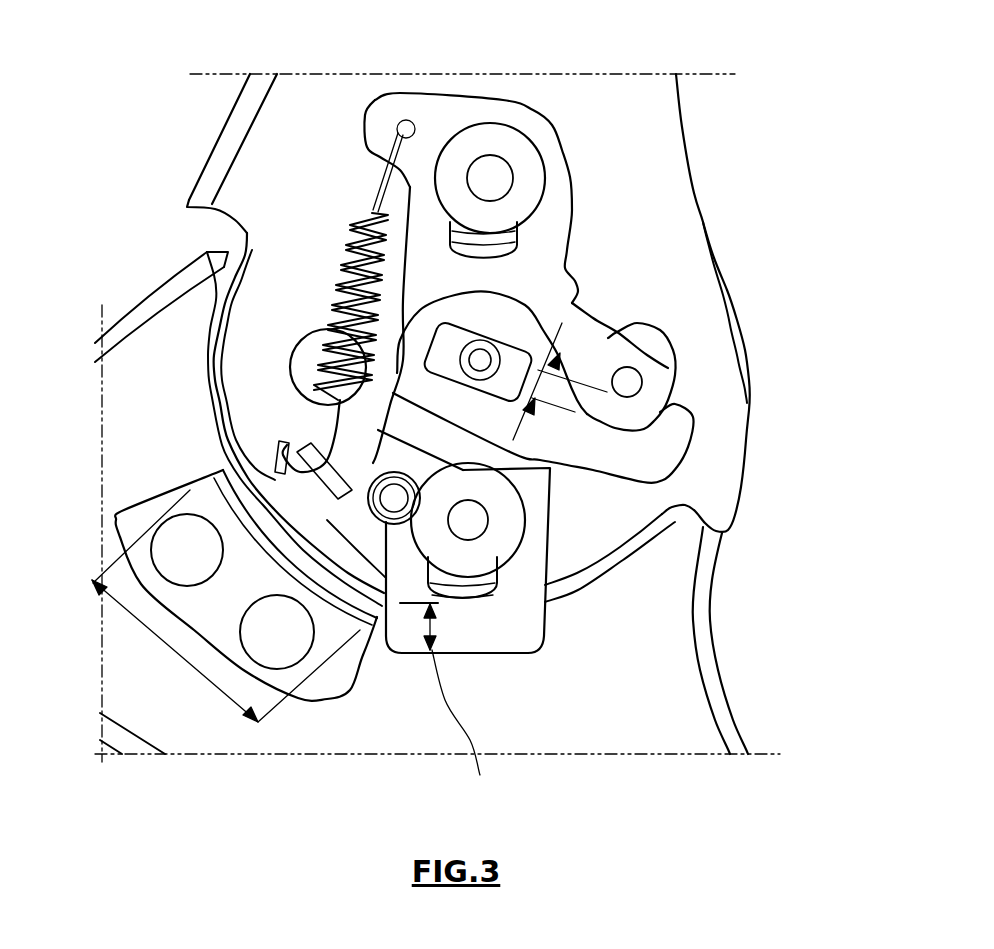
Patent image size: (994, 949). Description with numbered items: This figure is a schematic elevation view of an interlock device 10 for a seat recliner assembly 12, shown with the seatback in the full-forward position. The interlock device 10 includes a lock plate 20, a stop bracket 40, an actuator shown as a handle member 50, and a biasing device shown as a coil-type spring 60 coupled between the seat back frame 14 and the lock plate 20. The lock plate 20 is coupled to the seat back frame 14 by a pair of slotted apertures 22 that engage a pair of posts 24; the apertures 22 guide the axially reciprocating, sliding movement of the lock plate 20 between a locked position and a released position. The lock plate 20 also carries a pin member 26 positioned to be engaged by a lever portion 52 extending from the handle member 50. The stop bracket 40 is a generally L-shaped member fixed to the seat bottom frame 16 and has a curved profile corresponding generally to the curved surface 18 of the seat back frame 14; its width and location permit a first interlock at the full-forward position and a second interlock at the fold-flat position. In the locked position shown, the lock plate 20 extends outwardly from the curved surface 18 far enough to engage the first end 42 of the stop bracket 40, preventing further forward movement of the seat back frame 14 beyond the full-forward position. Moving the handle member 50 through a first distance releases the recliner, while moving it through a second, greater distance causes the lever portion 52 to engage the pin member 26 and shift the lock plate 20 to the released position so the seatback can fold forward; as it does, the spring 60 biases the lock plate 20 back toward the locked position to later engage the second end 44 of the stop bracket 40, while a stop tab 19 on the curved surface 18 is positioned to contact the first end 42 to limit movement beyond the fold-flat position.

The interlock device 10 is at (513, 700).
The seat recliner assembly 12 is at (755, 318).
The seat back frame 14 is at (650, 125).
The seat bottom frame 16 is at (640, 725).
The curved surface 18 is at (192, 362).
The stop tab 19 is at (716, 518).
The lock plate 20 is at (527, 632).
The slotted apertures 22 is at (513, 257).
The posts 24 is at (490, 172).
The pin member 26 is at (634, 382).
The stop bracket 40 is at (204, 608).
The first end 42 is at (392, 634).
The second end 44 is at (210, 470).
The handle member 50 is at (420, 420).
The lever portion 52 is at (640, 460).
The spring 60 is at (337, 270).